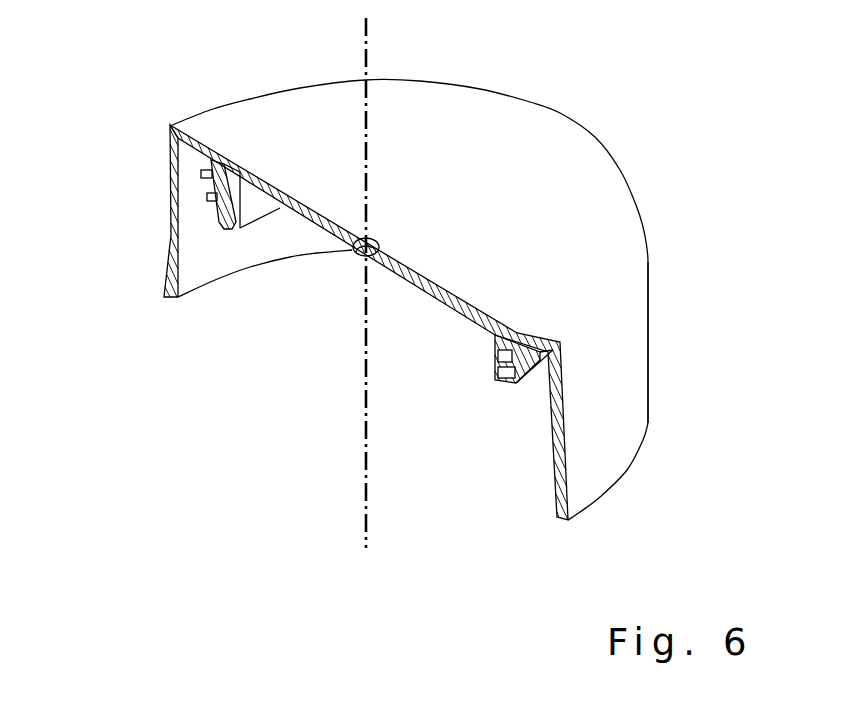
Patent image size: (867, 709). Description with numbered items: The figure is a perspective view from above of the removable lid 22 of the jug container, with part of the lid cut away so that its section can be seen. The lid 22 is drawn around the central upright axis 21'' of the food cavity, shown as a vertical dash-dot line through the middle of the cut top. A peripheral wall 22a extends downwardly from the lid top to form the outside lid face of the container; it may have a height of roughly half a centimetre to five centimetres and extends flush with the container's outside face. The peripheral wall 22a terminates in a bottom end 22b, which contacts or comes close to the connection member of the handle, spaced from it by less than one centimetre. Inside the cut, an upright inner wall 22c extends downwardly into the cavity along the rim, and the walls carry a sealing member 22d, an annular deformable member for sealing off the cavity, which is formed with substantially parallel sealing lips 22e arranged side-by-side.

The removable lid 22 is at (606, 71).
The central upright axis 21'' is at (323, 283).
The peripheral wall 22a is at (627, 407).
The bottom end 22b is at (165, 290).
The upright inner wall 22c is at (493, 358).
The sealing member 22d is at (505, 379).
The sealing lips 22e is at (210, 200).